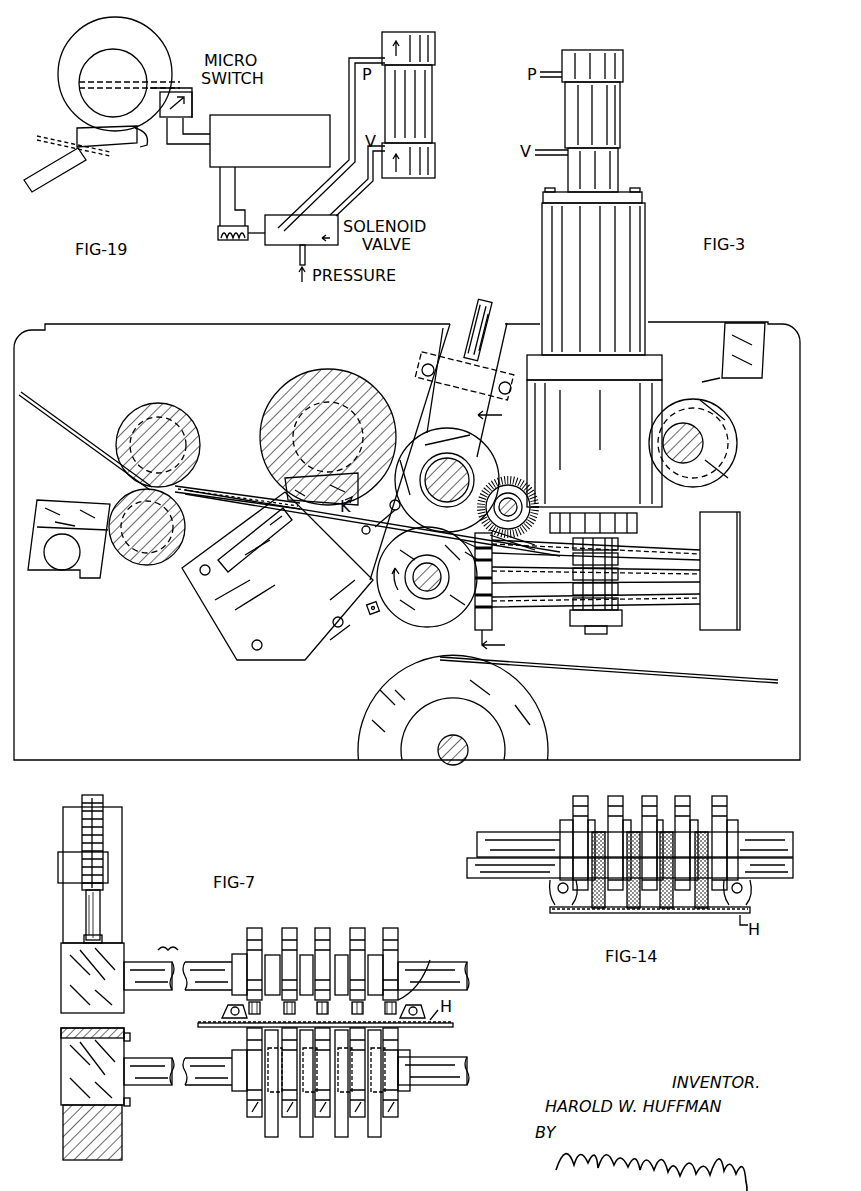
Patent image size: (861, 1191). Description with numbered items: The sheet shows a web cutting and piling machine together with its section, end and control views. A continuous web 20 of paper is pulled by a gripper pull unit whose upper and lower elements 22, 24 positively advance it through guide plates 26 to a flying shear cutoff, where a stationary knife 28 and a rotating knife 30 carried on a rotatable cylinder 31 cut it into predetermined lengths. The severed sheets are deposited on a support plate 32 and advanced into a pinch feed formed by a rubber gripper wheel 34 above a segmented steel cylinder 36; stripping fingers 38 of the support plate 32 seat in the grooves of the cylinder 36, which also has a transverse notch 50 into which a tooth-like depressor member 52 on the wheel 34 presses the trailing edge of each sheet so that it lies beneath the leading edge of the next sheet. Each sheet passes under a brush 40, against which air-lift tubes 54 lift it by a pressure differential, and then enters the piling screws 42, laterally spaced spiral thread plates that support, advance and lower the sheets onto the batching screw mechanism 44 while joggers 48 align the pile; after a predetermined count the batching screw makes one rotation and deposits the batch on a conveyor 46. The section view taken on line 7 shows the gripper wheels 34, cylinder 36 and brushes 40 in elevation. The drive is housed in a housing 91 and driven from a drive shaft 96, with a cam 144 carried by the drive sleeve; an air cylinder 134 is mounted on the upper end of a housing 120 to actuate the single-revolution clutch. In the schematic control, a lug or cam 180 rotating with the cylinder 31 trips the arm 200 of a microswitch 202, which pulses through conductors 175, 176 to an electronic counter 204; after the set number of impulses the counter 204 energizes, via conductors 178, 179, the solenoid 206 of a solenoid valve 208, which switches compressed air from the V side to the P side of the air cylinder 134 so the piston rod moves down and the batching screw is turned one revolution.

In FIG. 3, the section line 7— 7 is at (466, 477).
In FIG. 3, the continuous web 20 is at (72, 428).
In FIG. 3, the upper gripper pull element 22 is at (148, 404).
In FIG. 3, the lower gripper pull element 24 is at (145, 565).
In FIG. 3, the guide plates 26 is at (218, 508).
In FIG. 19, the stationary knife 28 is at (62, 170).
In FIG. 3, the stationary knife 28 is at (272, 545).
In FIG. 19, the rotating knife 30 is at (126, 147).
In FIG. 3, the rotating knife 30 is at (285, 485).
In FIG. 19, the rotatable cylinder 31 is at (146, 52).
In FIG. 3, the rotatable cylinder 31 is at (300, 380).
In FIG. 3, the support plate 32 is at (325, 515).
In FIG. 7, the support plate 32 is at (455, 1025).
In FIG. 3, the gripper wheel 34 is at (420, 445).
In FIG. 7, the gripper wheel 34 is at (245, 940).
In FIG. 14, the gripper wheel 34 is at (615, 808).
In FIG. 3, the segmented steel cylinder 36 is at (405, 628).
In FIG. 7, the segmented steel cylinder 36 is at (247, 1097).
In FIG. 7, the stripping fingers 38 is at (400, 1045).
In FIG. 3, the brush 40 is at (548, 499).
In FIG. 14, the brush 40 is at (598, 912).
In FIG. 3, the piling screws 42 is at (661, 530).
In FIG. 3, the batching screw mechanism 44 is at (655, 603).
In FIG. 3, the conveyor 46 is at (620, 674).
In FIG. 3, the joggers 48 is at (493, 626).
In FIG. 3, the notch 50 is at (470, 622).
In FIG. 7, the notch 50 is at (320, 1118).
In FIG. 3, the depressor member 52 is at (510, 478).
In FIG. 7, the depressor member 52 is at (424, 970).
In FIG. 3, the air-lift tubes 54 is at (392, 532).
In FIG. 7, the air-lift tubes 54 is at (213, 1012).
In FIG. 14, the air-lift tubes 54 is at (543, 901).
In FIG. 3, the housing 91 is at (590, 446).
In FIG. 3, the drive shaft 96 is at (700, 465).
In FIG. 3, the housing 120 is at (647, 276).
In FIG. 19, the air cylinder 134 is at (432, 78).
In FIG. 3, the air cylinder 134 is at (625, 155).
In FIG. 3, the cam 144 is at (637, 520).
In FIG. 19, the conductor 175 is at (203, 126).
In FIG. 19, the conductor 176 is at (180, 148).
In FIG. 19, the conductor 178 is at (219, 212).
In FIG. 19, the conductor 179 is at (232, 205).
In FIG. 19, the lug or cam 180 is at (150, 82).
In FIG. 19, the microswitch arm 200 is at (178, 88).
In FIG. 19, the microswitch 202 is at (190, 92).
In FIG. 19, the electronic counter 204 is at (292, 116).
In FIG. 19, the solenoid 206 is at (221, 241).
In FIG. 19, the solenoid valve 208 is at (283, 244).